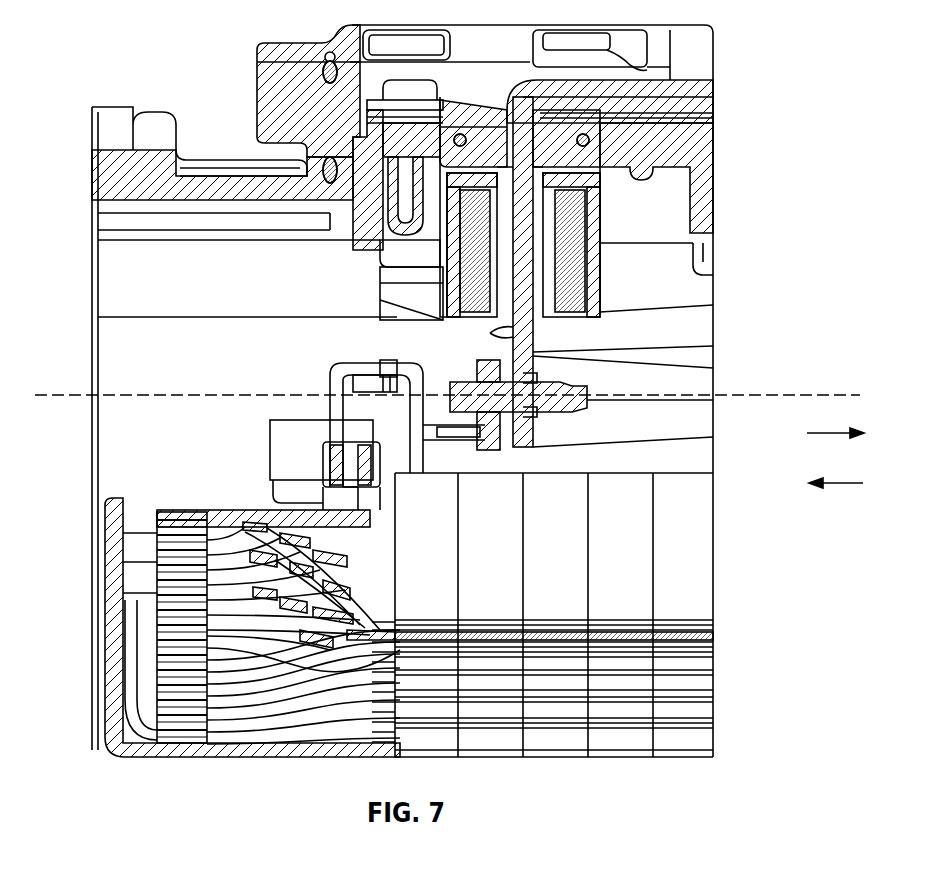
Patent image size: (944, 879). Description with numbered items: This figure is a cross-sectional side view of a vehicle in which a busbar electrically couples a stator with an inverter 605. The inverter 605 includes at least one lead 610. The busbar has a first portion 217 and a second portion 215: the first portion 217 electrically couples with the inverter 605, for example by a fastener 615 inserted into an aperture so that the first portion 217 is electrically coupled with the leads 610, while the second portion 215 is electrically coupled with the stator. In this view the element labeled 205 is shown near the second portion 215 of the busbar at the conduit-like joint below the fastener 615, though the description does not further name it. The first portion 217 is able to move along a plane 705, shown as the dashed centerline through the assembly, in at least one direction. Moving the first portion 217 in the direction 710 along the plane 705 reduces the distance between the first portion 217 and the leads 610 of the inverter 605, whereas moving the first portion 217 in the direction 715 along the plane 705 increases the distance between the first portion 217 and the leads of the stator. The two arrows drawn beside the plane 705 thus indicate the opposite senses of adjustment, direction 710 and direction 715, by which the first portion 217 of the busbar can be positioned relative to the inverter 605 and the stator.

The cooling fluid conduit fitting 205 is at (435, 441).
The second portion 215 is at (343, 365).
The first portion 217 is at (497, 450).
The inverter 605 is at (580, 284).
The lead 610 is at (535, 357).
The fastener 615 is at (572, 400).
The plane 705 is at (835, 395).
The direction 710 is at (826, 430).
The direction 715 is at (845, 482).